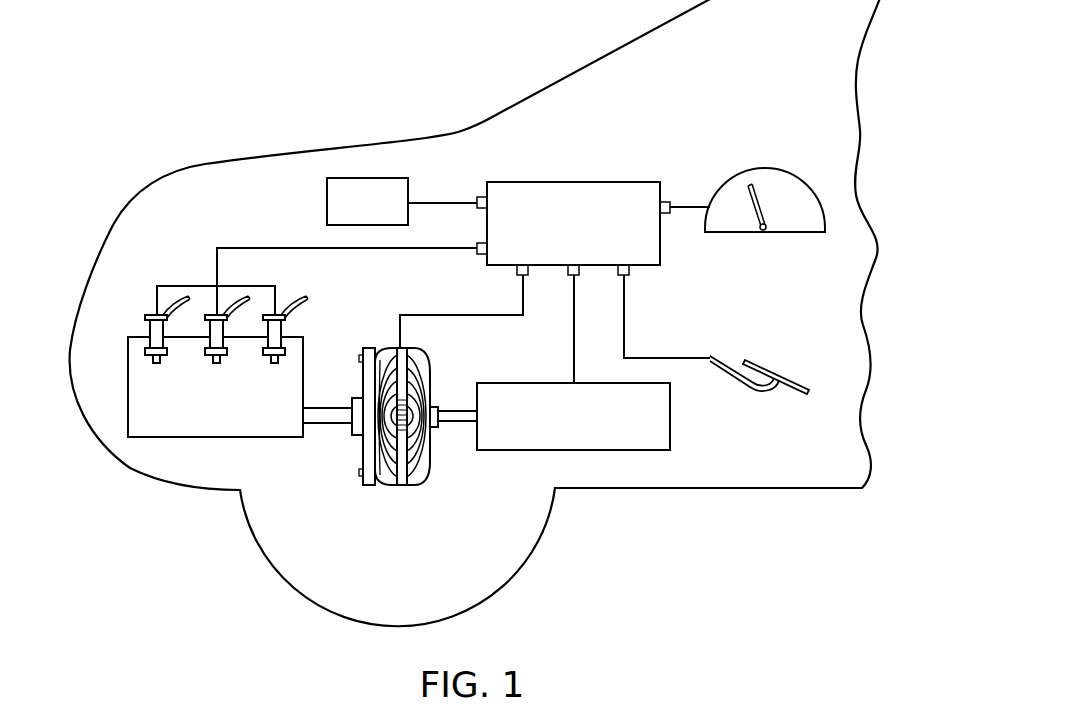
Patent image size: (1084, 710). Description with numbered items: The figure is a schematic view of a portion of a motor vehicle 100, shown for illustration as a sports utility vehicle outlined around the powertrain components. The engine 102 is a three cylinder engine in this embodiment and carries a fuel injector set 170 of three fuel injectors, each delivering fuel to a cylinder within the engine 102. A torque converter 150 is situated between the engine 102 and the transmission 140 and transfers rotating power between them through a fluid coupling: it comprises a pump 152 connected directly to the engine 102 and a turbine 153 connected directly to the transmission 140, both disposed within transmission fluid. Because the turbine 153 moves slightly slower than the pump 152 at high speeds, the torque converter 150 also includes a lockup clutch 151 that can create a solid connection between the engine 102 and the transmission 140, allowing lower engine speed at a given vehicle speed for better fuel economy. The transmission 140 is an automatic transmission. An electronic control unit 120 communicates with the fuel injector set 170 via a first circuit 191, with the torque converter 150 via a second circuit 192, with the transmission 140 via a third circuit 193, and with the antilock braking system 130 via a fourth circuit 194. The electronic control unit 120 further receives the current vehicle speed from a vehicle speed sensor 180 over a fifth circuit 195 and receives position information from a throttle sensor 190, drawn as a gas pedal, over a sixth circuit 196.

The motor vehicle 100 is at (243, 138).
The engine 102 is at (272, 439).
The electronic control unit 120 is at (570, 181).
The antilock braking system 130 is at (326, 201).
The transmission 140 is at (501, 451).
The torque converter 150 is at (376, 428).
The lockup clutch 151 is at (362, 458).
The pump 152 is at (414, 475).
The turbine 153 is at (391, 360).
The fuel injector set 170 is at (278, 331).
The vehicle speed sensor 180 is at (764, 171).
The throttle sensor 190 is at (770, 374).
The first circuit 191 is at (234, 246).
The second circuit 192 is at (440, 314).
The third circuit 193 is at (572, 347).
The fourth circuit 194 is at (438, 201).
The fifth circuit 195 is at (689, 205).
The sixth circuit 196 is at (626, 311).